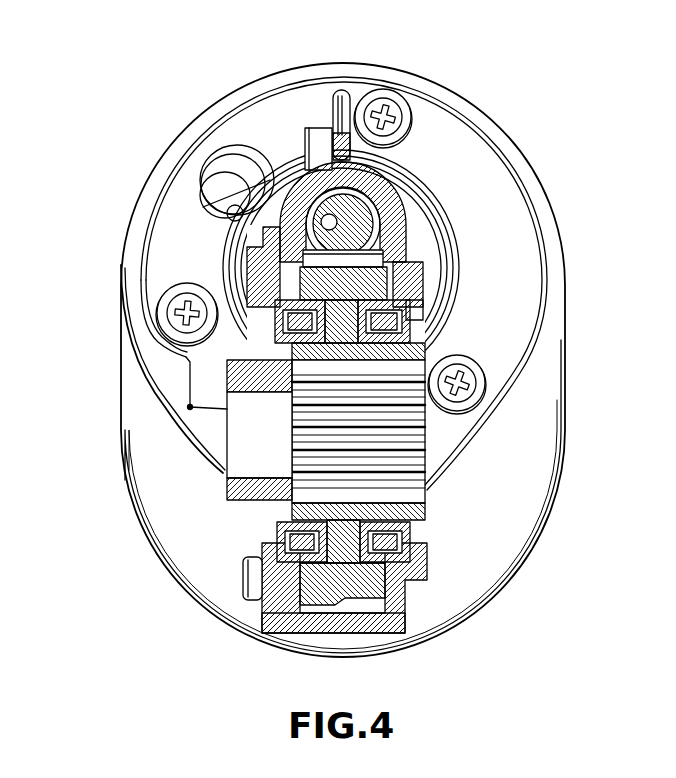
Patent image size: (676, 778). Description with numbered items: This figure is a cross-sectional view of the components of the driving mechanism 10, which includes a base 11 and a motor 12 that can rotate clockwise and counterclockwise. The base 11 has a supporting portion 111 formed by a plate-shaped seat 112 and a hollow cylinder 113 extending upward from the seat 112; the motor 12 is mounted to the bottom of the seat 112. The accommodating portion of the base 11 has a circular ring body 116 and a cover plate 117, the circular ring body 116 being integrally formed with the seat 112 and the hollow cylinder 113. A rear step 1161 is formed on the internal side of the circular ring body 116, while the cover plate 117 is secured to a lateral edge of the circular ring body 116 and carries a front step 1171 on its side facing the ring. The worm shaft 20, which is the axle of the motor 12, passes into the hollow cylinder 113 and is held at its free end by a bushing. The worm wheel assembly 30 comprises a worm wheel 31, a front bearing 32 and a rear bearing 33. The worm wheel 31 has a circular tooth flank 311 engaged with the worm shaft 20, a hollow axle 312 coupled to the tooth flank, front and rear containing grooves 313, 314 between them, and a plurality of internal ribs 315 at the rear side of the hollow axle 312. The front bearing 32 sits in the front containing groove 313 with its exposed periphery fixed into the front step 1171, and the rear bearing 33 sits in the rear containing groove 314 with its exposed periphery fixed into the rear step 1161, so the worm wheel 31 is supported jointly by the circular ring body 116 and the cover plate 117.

The driving mechanism 10 is at (434, 68).
The base 11 is at (412, 192).
The motor 12 is at (490, 121).
The worm shaft 20 is at (358, 226).
The worm wheel assembly 30 is at (212, 477).
The worm wheel 31 is at (247, 594).
The front bearing 32 is at (186, 358).
The rear bearing 33 is at (418, 330).
The supporting portion 111 is at (156, 156).
The seat 112 is at (228, 135).
The hollow cylinder 113 is at (275, 180).
The circular ring body 116 is at (370, 625).
The cover plate 117 is at (287, 250).
The circular tooth flank 311 is at (340, 603).
The hollow axle 312 is at (265, 528).
The front containing groove 313 is at (292, 300).
The rear containing groove 314 is at (410, 274).
The internal ribs 315 is at (418, 461).
The rear step 1161 is at (428, 312).
The front step 1171 is at (266, 305).